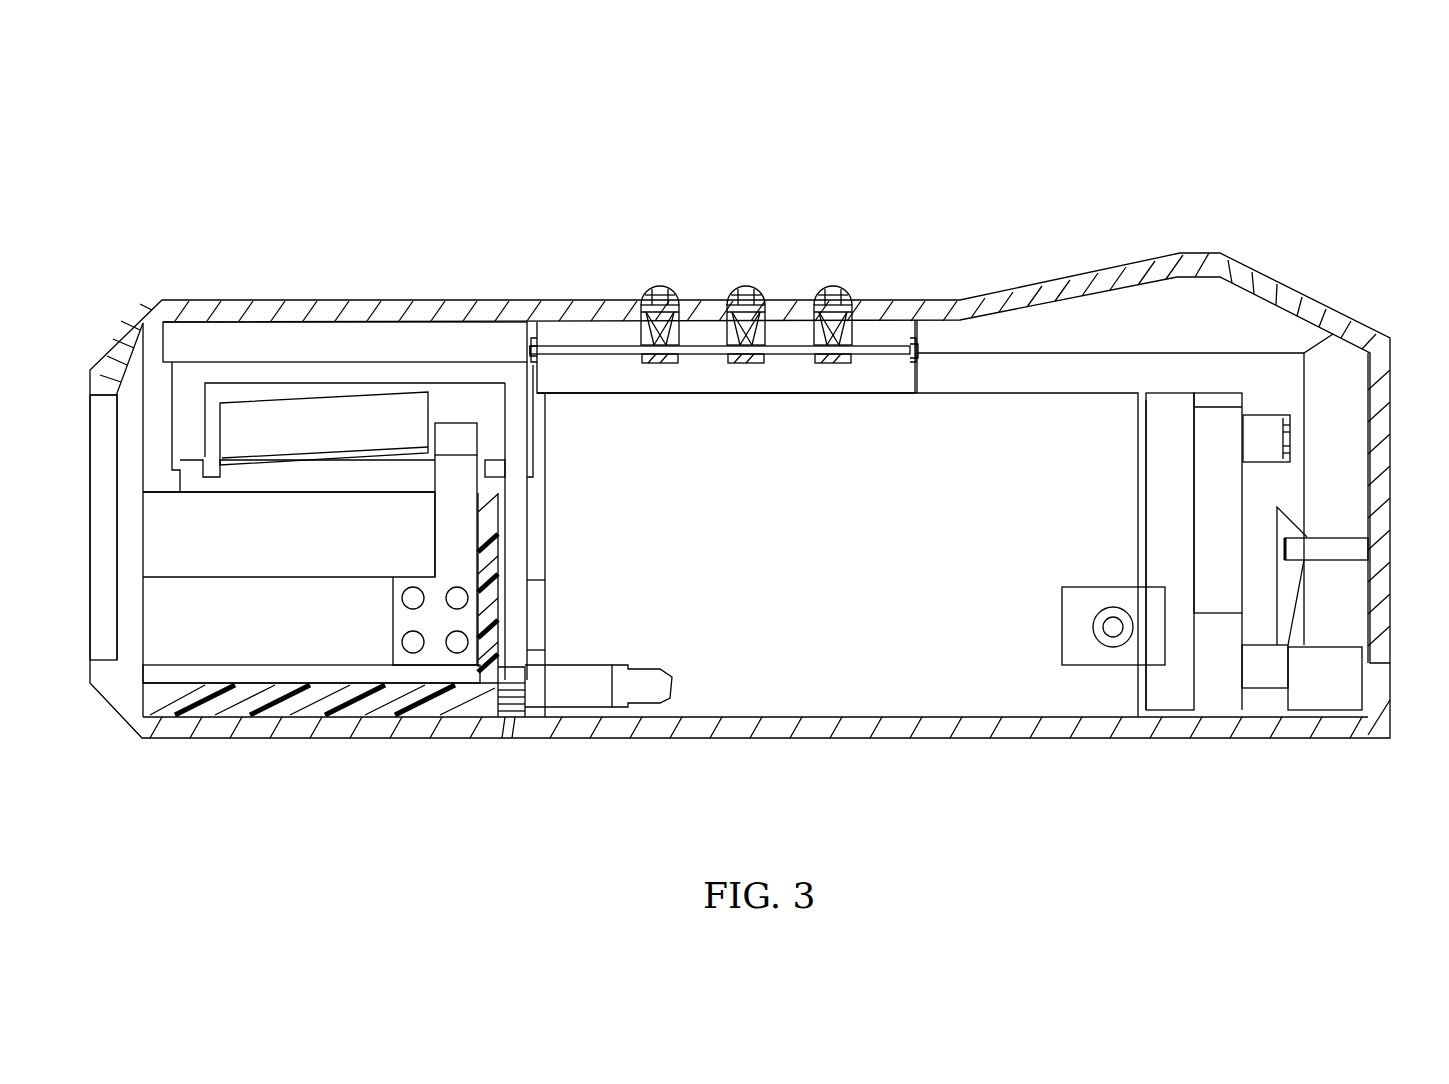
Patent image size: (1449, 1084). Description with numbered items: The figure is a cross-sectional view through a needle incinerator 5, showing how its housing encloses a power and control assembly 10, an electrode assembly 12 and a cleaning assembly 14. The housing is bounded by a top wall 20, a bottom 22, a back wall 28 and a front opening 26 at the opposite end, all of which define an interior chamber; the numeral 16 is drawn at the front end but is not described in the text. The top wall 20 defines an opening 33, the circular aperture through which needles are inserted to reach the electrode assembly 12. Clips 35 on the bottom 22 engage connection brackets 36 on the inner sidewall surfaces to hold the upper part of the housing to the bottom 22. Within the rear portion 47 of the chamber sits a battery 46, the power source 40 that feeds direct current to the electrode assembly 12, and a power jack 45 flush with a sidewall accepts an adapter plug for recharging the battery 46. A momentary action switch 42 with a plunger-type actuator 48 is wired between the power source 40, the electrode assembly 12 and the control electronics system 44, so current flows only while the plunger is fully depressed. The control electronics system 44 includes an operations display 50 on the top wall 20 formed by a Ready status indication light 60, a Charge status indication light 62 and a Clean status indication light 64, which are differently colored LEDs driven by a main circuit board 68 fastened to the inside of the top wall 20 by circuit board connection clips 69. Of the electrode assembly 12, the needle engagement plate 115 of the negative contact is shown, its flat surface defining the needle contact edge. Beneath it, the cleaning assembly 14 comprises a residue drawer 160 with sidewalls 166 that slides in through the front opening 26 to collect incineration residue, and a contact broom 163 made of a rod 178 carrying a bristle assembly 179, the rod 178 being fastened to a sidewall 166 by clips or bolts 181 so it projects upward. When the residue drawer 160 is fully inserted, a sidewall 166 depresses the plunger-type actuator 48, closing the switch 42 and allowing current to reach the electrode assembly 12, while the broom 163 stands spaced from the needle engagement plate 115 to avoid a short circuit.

The needle incinerator 5 is at (563, 100).
The power and control assembly 10 is at (887, 333).
The electrode assembly 12 is at (235, 396).
The cleaning assembly 14 is at (378, 651).
The front end wall 16 is at (134, 297).
The top wall 20 is at (1291, 292).
The bottom 22 is at (236, 725).
The front opening 26 is at (148, 707).
The back wall 28 is at (1388, 486).
The opening 33 is at (353, 302).
The clips 35 is at (1296, 596).
The connection brackets 36 is at (1322, 538).
The power source 40 is at (779, 428).
The momentary action switch 42 is at (587, 663).
The control electronics system 44 is at (568, 347).
The power jack 45 is at (1092, 655).
The battery 46 is at (850, 532).
The rear portion 47 is at (1180, 388).
The plunger-type actuator 48 is at (506, 717).
The operations display 50 is at (764, 246).
The "Ready" status indication light 60 is at (797, 231).
The "Charge" status indication light 62 is at (752, 290).
The "Clean" status indication light 64 is at (666, 290).
The main circuit board 68 is at (702, 352).
The circuit board connection clips 69 is at (539, 364).
The needle engagement plate 115 is at (345, 442).
The residue drawer 160 is at (297, 642).
The contact broom 163 is at (434, 477).
The sidewalls 166 is at (195, 642).
The rod 178 is at (437, 527).
The bristle assembly 179 is at (458, 430).
The clips or bolts 181 is at (393, 617).